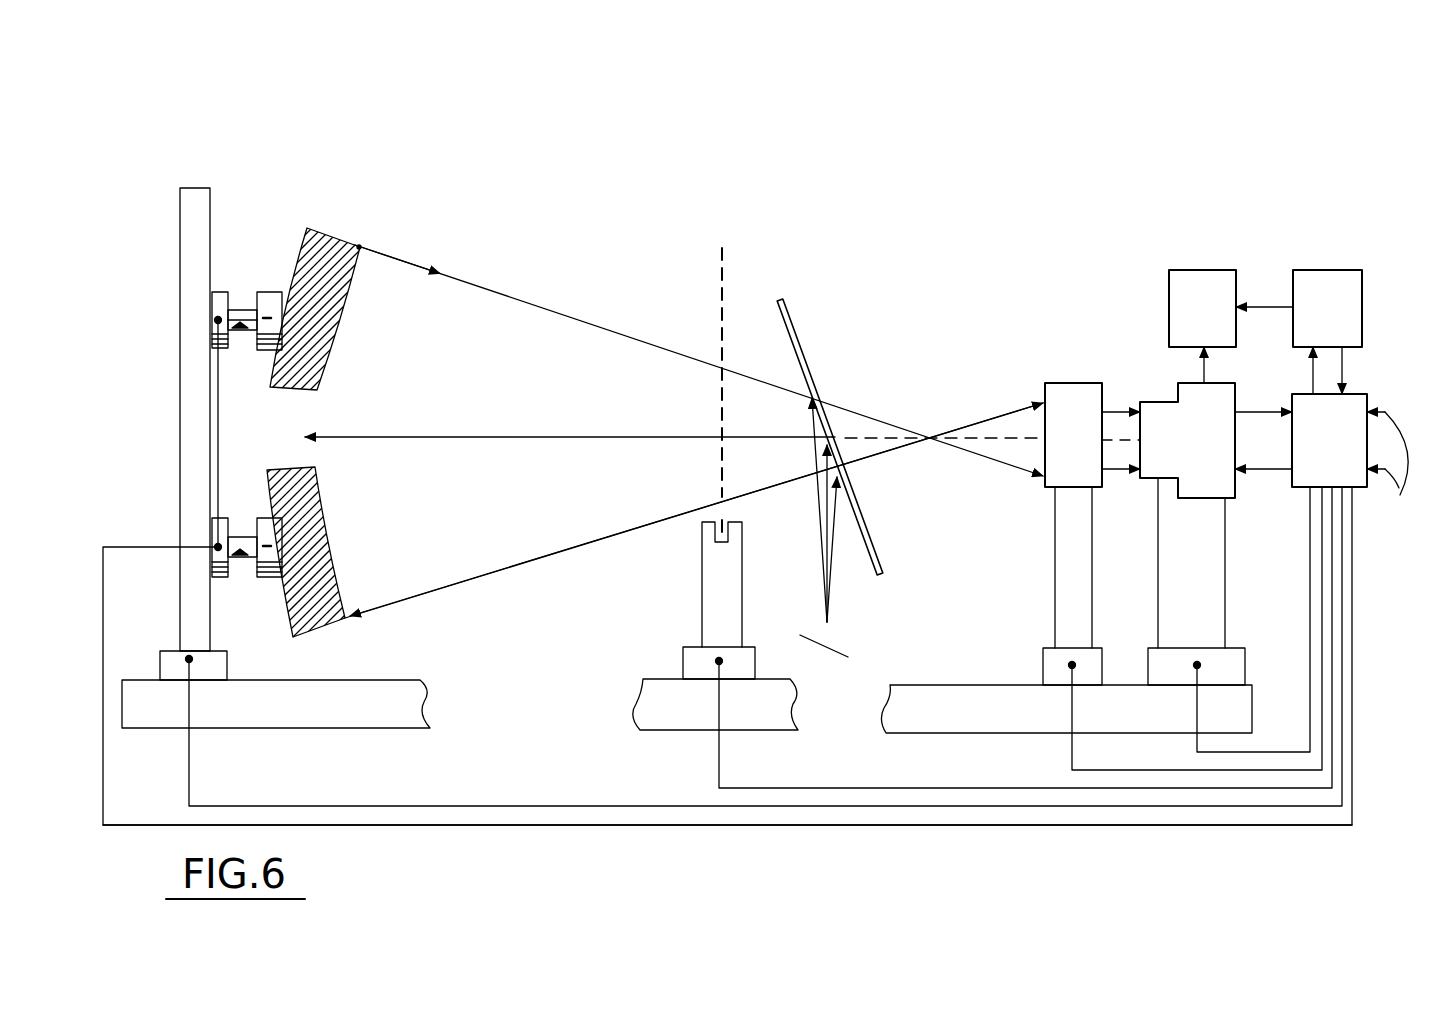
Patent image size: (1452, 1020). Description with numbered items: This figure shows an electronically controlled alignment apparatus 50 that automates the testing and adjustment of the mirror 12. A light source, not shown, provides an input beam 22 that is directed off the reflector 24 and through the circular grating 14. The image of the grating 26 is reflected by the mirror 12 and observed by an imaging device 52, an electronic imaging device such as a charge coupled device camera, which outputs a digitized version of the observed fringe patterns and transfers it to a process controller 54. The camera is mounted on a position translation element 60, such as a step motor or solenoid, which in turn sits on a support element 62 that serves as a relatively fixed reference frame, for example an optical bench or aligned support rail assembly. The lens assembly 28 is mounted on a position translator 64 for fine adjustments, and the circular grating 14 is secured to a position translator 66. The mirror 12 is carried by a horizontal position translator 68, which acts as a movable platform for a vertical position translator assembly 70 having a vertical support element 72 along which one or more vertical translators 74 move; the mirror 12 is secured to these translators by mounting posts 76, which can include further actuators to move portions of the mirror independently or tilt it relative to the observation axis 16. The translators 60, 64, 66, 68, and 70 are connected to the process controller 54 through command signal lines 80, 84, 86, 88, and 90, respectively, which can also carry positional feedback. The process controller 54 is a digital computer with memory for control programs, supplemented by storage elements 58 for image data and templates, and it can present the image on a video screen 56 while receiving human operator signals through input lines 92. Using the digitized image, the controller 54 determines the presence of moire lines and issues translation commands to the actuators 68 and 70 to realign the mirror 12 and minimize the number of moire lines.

The mirror 12 is at (337, 238).
The circular grating 14 is at (720, 265).
The observation axis 16 is at (867, 433).
The input beam 22 is at (368, 243).
The reflector 24 is at (803, 352).
The image of the grating 26 is at (446, 262).
The lens assembly 28 is at (1073, 435).
The alignment apparatus 50 is at (930, 235).
The imaging device 52 is at (1168, 440).
The process controller 54 is at (1301, 440).
The video screen 56 is at (1202, 326).
The storage element 58 is at (1299, 332).
The position translation element 60 is at (1235, 648).
The support element 62 is at (687, 706).
The position translator 64 is at (1042, 665).
The position translator 66 is at (660, 658).
The horizontal position translator 68 is at (215, 650).
The vertical position translator assembly 70 is at (145, 180).
The vertical support element 72 is at (180, 405).
The vertical translators 74 is at (215, 292).
The mounting posts 76 is at (246, 332).
The command signal line 80 is at (1195, 743).
The command signal line 84 is at (1070, 748).
The command signal line 86 is at (715, 758).
The command signal line 88 is at (385, 803).
The command signal line 90 is at (700, 825).
The input lines 92 is at (1389, 467).